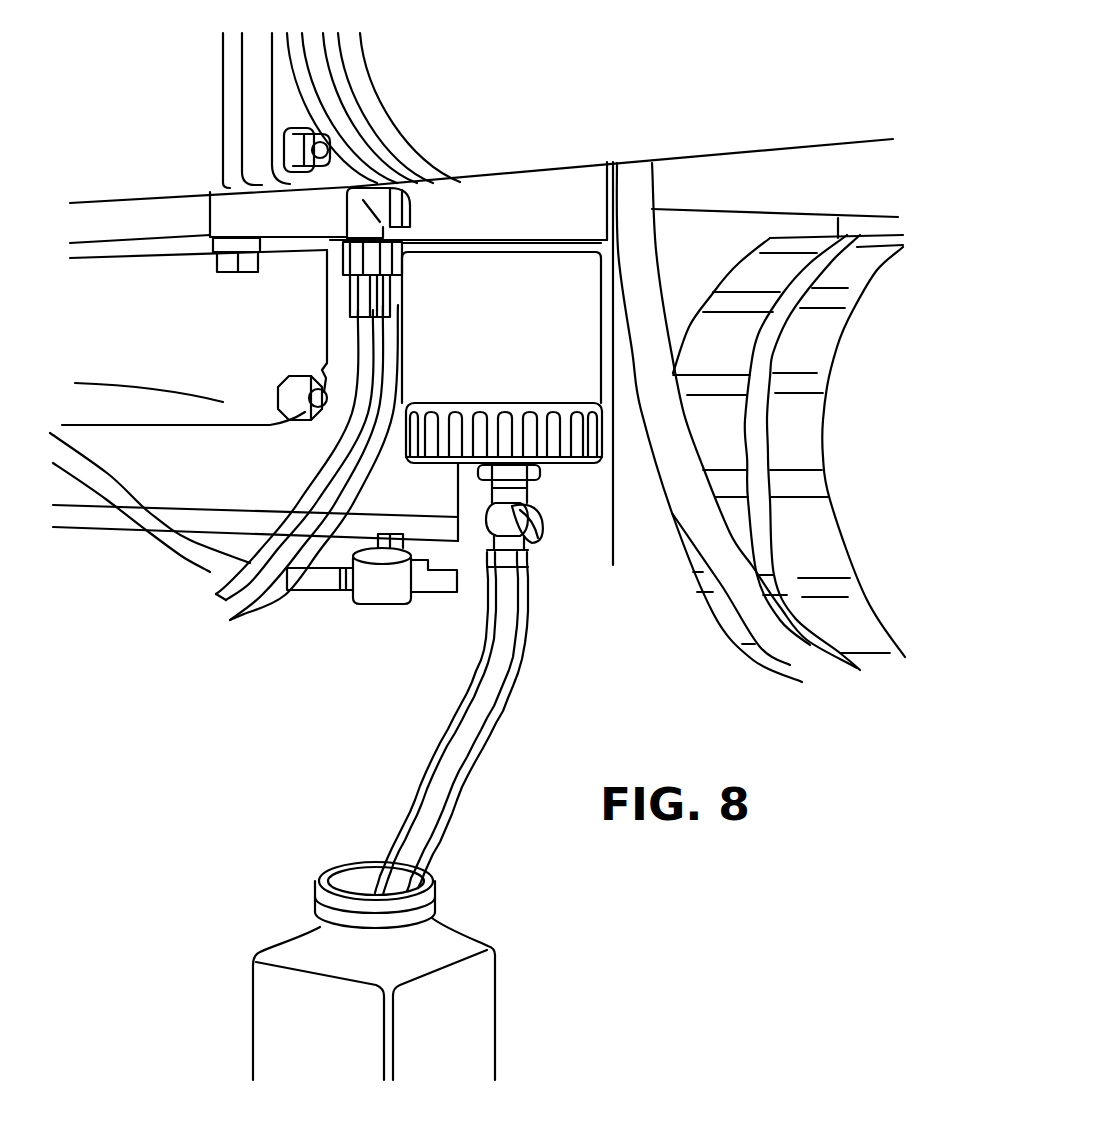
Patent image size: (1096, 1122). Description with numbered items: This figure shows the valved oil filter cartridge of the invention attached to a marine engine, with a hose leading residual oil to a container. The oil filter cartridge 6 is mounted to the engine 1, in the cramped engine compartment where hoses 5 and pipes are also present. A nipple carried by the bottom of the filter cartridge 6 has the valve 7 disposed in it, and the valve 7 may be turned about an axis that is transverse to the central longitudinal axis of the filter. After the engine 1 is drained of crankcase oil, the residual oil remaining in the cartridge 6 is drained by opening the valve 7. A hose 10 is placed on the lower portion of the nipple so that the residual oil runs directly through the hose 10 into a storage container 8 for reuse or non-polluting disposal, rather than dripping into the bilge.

The engine 1 is at (468, 218).
The hoses 5 is at (642, 268).
The oil filter cartridge 6 is at (557, 317).
The valve 7 is at (537, 510).
The storage container 8 is at (468, 1050).
The hose 10 is at (446, 755).